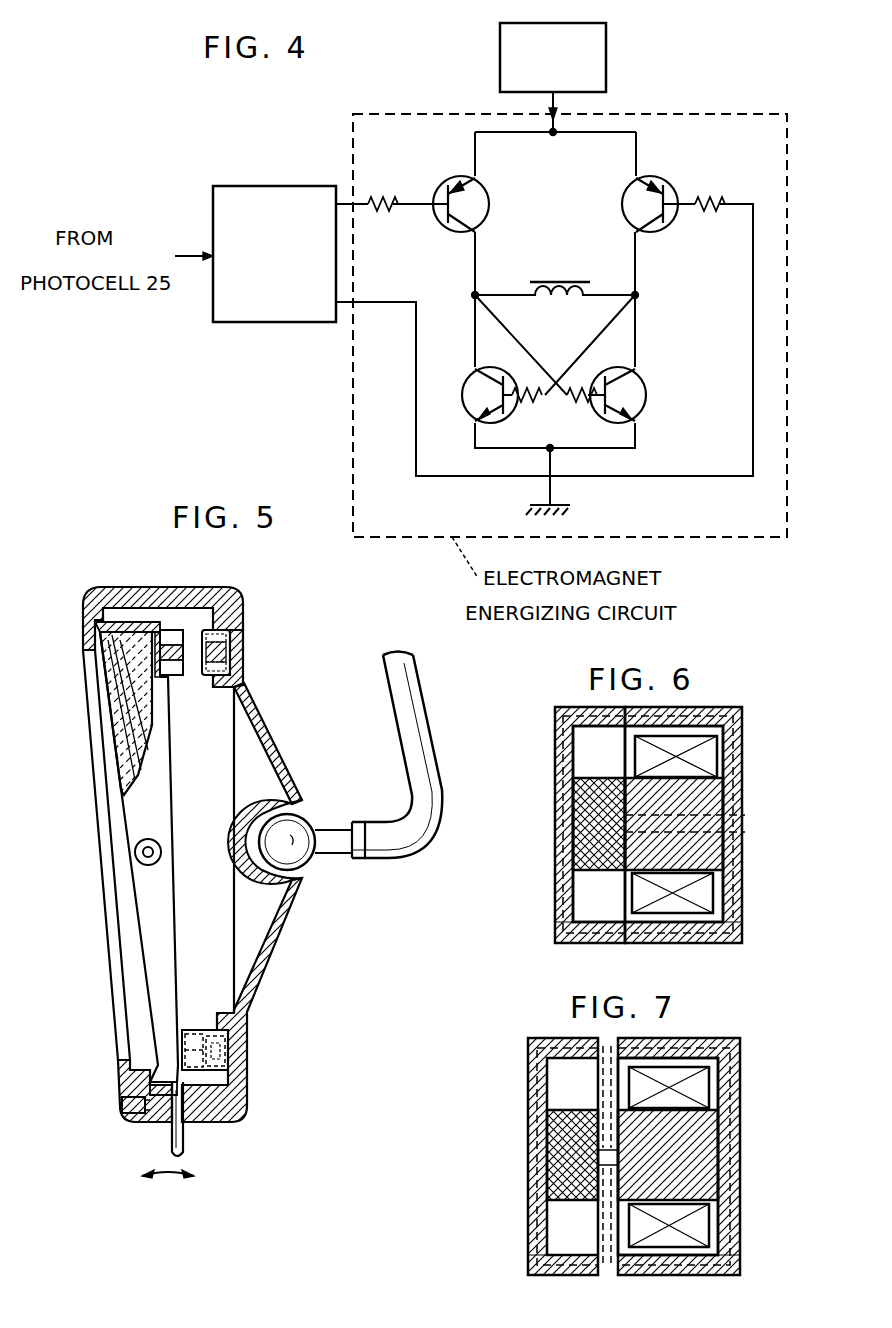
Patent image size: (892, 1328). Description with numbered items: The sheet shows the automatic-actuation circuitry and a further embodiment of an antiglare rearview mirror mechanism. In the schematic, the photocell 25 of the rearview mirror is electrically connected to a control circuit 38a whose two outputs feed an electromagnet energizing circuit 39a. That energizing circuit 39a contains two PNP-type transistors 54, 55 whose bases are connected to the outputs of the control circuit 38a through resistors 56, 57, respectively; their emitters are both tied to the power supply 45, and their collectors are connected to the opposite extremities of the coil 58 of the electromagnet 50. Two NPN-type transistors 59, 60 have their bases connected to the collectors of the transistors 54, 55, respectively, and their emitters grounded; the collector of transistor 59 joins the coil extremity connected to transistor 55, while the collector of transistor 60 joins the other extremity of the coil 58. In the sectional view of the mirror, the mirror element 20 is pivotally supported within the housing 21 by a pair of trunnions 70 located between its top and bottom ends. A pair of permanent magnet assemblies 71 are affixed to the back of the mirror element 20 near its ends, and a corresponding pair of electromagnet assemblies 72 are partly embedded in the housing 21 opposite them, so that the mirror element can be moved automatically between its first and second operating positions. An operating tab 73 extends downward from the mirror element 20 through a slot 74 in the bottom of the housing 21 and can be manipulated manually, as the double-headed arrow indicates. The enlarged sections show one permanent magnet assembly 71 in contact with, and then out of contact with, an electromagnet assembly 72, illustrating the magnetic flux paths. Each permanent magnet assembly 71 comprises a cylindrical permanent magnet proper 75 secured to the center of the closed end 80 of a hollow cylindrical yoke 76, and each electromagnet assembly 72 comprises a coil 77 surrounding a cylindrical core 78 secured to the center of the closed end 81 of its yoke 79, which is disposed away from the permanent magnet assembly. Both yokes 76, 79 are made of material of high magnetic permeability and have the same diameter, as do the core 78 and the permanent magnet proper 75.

In FIG. 4, the power supply 45 is at (606, 65).
In FIG. 4, the electromagnet energizing circuit 39a is at (406, 112).
In FIG. 4, the control circuit 38a is at (258, 186).
In FIG. 4, the resistor 56 is at (380, 197).
In FIG. 4, the resistor 57 is at (708, 196).
In FIG. 4, the PNP-type transistor 54 is at (488, 196).
In FIG. 4, the PNP-type transistor 55 is at (622, 196).
In FIG. 4, the NPN-type transistor 60 is at (462, 384).
In FIG. 4, the NPN-type transistor 59 is at (646, 384).
In FIG. 4, the electromagnet 50 is at (553, 278).
In FIG. 4, the coil 58 is at (555, 306).
In FIG. 5, the mirror housing 21 is at (124, 592).
In FIG. 5, the mirror element 20 is at (117, 692).
In FIG. 5, the trunnion 70 is at (134, 852).
In FIG. 5, the permanent magnet assembly 71 is at (170, 628).
In FIG. 6, the permanent magnet assembly 71 is at (573, 706).
In FIG. 7, the permanent magnet assembly 71 is at (552, 1036).
In FIG. 5, the electromagnet assembly 72 is at (213, 628).
In FIG. 6, the electromagnet assembly 72 is at (717, 706).
In FIG. 7, the electromagnet assembly 72 is at (706, 1036).
In FIG. 5, the photocell 25 is at (120, 1105).
In FIG. 5, the slot 74 is at (157, 1115).
In FIG. 5, the operating tab 73 is at (183, 1140).
In FIG. 6, the closed end of permanent magnet assembly yoke 80 is at (561, 764).
In FIG. 7, the closed end of permanent magnet assembly yoke 80 is at (529, 1098).
In FIG. 6, the closed end of electromagnet assembly yoke 81 is at (742, 746).
In FIG. 7, the closed end of electromagnet assembly yoke 81 is at (740, 1106).
In FIG. 6, the permanent magnet proper 75 is at (582, 855).
In FIG. 7, the permanent magnet proper 75 is at (557, 1182).
In FIG. 6, the electromagnet core 78 is at (710, 856).
In FIG. 7, the electromagnet core 78 is at (708, 1188).
In FIG. 6, the coil 77 is at (705, 895).
In FIG. 7, the coil 77 is at (700, 1225).
In FIG. 6, the yoke or casing of permanent magnet assembly 76 is at (590, 936).
In FIG. 7, the yoke or casing of permanent magnet assembly 76 is at (560, 1277).
In FIG. 6, the yoke or casing of electromagnet assembly 79 is at (680, 936).
In FIG. 7, the yoke or casing of electromagnet assembly 79 is at (670, 1277).